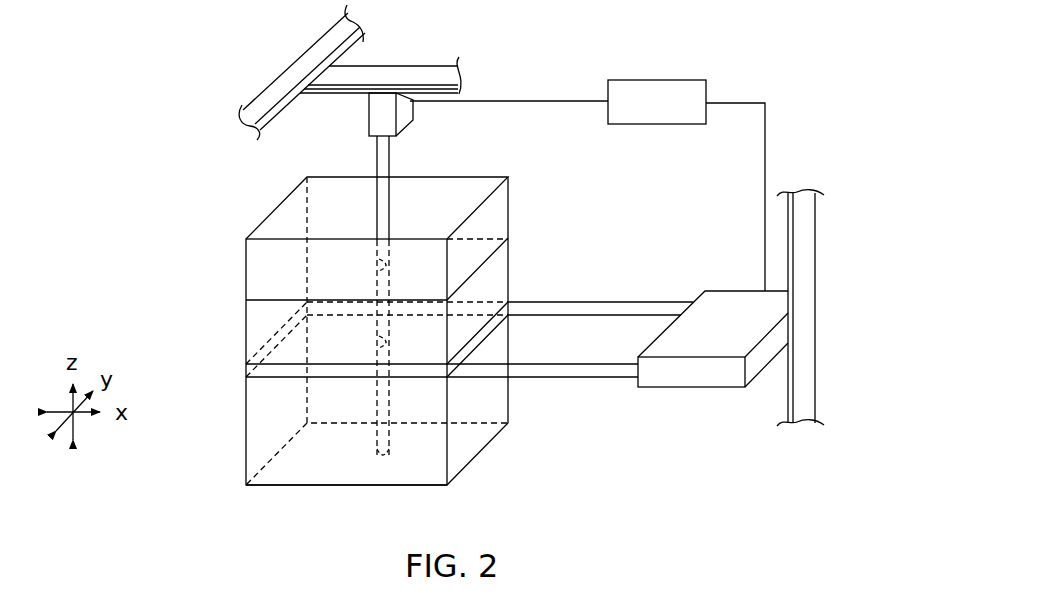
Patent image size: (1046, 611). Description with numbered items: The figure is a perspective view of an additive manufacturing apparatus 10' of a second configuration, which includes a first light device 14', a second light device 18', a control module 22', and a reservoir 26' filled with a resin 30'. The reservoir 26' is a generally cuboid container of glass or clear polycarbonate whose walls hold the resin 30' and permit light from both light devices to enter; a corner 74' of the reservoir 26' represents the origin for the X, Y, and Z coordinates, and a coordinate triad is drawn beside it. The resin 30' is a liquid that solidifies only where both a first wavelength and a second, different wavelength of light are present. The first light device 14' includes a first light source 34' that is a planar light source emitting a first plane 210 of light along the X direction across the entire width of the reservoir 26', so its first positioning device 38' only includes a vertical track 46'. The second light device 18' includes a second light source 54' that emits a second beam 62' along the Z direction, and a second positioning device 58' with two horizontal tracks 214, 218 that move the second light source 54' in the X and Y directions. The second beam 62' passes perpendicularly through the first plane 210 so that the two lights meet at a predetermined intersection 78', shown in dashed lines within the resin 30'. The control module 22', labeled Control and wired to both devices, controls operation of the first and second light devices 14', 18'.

The additive manufacturing apparatus 10' is at (466, 244).
The first light device 14' is at (760, 338).
The second light device 18' is at (423, 166).
The control module 22' is at (587, 151).
The reservoir 26' is at (383, 327).
The resin 30' is at (516, 331).
The first light source 34' is at (713, 368).
The first positioning device 38' is at (756, 401).
The vertical track 46' is at (829, 308).
The second light source 54' is at (422, 136).
The second positioning device 58' is at (271, 72).
The second beam 62' is at (341, 188).
The corner 74' is at (313, 458).
The intersection 78' is at (283, 347).
The first plane 210 is at (560, 370).
The horizontal track 214 is at (277, 89).
The horizontal track 218 is at (400, 67).